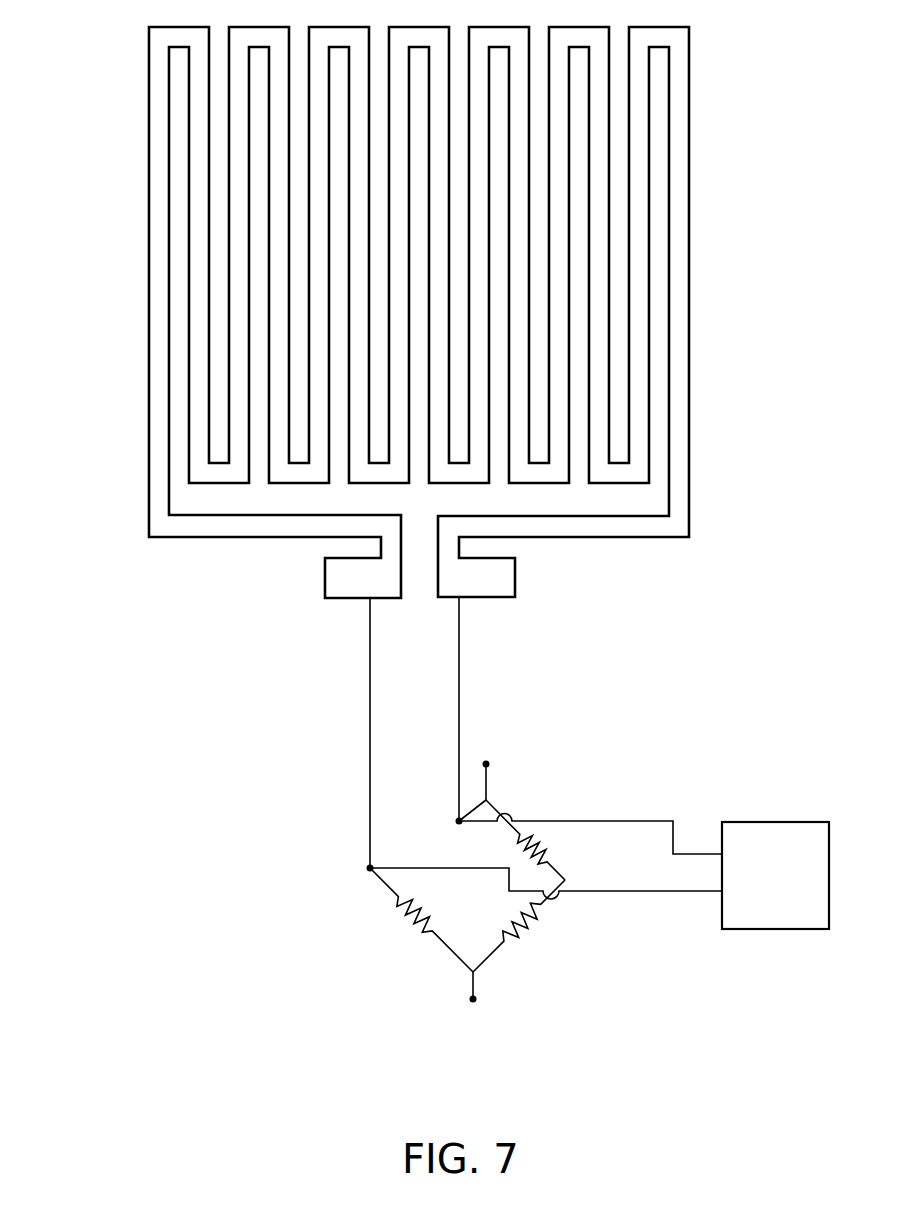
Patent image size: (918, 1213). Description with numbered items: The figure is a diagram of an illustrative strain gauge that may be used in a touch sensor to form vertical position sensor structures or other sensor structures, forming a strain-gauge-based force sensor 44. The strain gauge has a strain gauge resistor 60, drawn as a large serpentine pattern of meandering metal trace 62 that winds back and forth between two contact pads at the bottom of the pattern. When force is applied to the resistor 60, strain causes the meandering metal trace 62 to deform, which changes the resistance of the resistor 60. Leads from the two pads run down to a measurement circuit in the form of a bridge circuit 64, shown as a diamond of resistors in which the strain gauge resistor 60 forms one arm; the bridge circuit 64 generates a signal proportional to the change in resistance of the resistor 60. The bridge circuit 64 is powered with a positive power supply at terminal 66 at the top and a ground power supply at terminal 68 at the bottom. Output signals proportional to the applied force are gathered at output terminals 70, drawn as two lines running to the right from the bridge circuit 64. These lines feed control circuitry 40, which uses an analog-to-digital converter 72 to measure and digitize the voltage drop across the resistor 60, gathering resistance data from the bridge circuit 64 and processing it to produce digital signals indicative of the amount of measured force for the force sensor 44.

The strain-gauge-based force sensor 44 is at (419, 310).
The strain gauge resistor 60 is at (479, 310).
The meandering metal trace 62 is at (745, 22).
The bridge circuit 64 is at (412, 815).
The terminal 66 is at (485, 762).
The terminal 68 is at (450, 1002).
The output terminals 70 is at (623, 892).
The control circuitry 40 is at (780, 880).
The analog-to-digital converter 72 is at (782, 929).